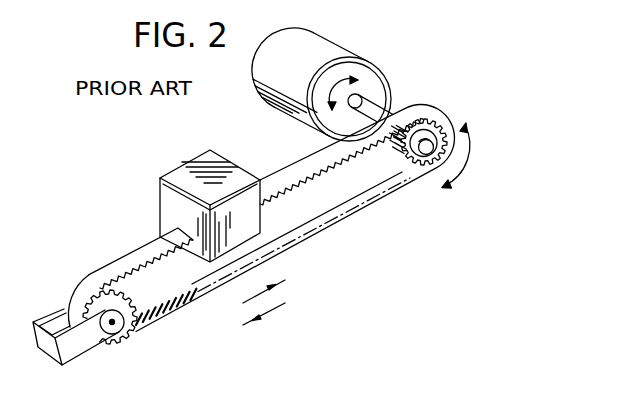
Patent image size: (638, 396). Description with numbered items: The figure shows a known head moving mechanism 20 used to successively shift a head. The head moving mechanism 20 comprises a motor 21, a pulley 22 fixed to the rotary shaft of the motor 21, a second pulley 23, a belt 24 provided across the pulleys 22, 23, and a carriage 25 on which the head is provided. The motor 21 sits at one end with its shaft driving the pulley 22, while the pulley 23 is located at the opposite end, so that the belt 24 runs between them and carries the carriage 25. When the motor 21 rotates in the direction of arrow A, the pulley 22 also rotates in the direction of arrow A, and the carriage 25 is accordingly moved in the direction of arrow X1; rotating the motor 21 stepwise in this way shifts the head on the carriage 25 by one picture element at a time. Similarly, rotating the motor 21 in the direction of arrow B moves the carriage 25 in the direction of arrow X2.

The head moving mechanism 20 is at (384, 46).
The motor 21 is at (253, 70).
The pulley 22 is at (426, 127).
The pulley 23 is at (127, 331).
The belt 24 is at (356, 214).
The carriage 25 is at (175, 171).